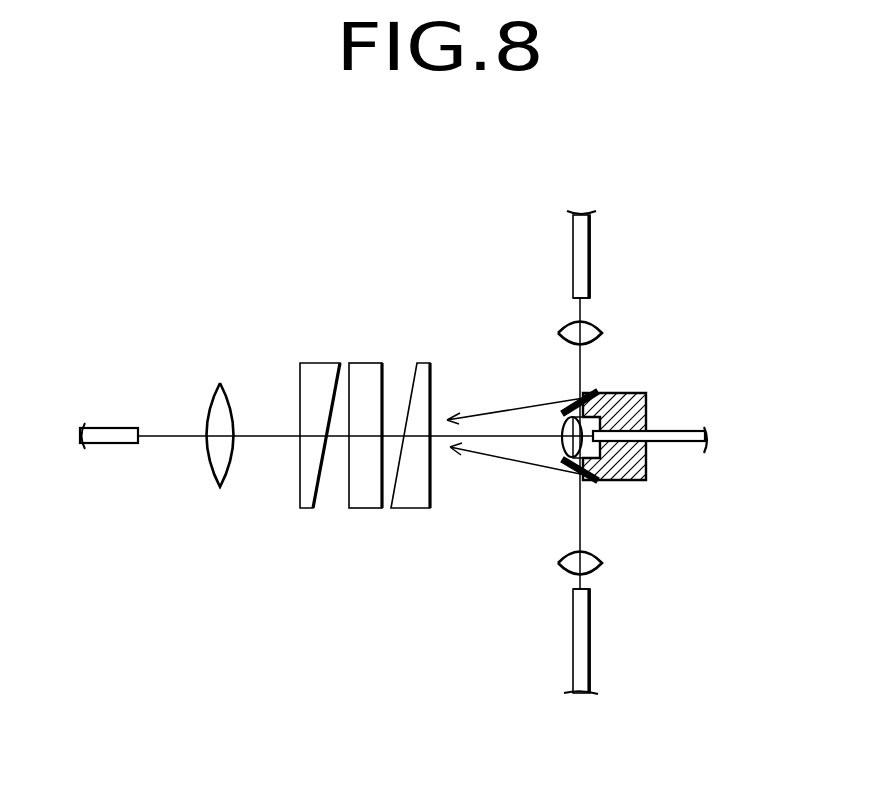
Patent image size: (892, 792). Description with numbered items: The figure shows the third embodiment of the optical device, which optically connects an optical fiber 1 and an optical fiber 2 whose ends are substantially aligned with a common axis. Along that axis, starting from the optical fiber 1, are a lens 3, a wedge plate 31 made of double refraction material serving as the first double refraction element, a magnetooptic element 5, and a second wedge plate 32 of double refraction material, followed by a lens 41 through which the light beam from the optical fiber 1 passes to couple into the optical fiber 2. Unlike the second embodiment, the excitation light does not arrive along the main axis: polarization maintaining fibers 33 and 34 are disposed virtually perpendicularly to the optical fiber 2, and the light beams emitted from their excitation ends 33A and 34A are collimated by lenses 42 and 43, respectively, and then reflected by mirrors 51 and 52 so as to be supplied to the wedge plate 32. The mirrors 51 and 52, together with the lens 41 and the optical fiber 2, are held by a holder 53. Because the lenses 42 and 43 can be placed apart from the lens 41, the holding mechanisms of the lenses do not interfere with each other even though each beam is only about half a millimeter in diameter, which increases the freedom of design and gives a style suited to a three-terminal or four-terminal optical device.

The optical fiber 1 is at (117, 426).
The optical fiber 2 is at (688, 430).
The lens 3 is at (215, 470).
The magnetooptic element 5 is at (365, 512).
The wedge plate 31 is at (304, 512).
The wedge plate 32 is at (420, 512).
The polarization maintaining fiber 33 is at (571, 243).
The excitation end 33A is at (588, 300).
The polarization maintaining fiber 34 is at (593, 646).
The excitation end 34A is at (593, 589).
The lens 41 is at (561, 445).
The lens 42 is at (562, 330).
The lens 43 is at (598, 556).
The mirror 51 is at (588, 393).
The mirror 52 is at (588, 479).
The holder 53 is at (637, 393).